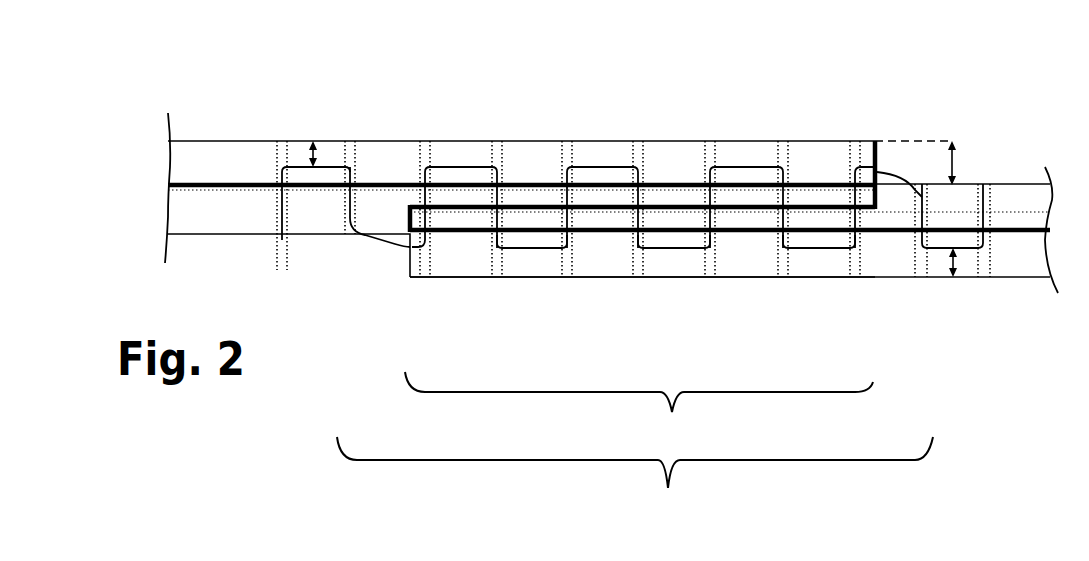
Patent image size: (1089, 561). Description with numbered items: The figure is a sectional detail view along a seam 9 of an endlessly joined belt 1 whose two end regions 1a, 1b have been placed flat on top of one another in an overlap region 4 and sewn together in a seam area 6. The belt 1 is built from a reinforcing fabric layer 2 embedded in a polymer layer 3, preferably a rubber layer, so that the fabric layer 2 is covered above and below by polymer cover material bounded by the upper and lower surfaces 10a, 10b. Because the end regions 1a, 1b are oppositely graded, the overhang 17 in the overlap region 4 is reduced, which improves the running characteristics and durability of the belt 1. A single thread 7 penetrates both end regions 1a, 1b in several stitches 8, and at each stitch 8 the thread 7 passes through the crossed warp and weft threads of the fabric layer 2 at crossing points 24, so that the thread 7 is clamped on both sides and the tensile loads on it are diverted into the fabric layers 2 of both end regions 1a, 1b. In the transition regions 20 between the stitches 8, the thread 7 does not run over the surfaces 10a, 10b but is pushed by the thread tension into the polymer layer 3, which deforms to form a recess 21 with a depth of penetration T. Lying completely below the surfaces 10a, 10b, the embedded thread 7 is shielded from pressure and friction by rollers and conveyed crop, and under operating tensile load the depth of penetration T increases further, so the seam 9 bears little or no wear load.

The belt 1 is at (801, 122).
The end region 1a is at (860, 140).
The end region 1b is at (466, 280).
The reinforcing fabric layer 2 is at (188, 183).
The polymer layer 3 is at (183, 208).
The overlap region 4 is at (639, 420).
The seam area 6 is at (635, 496).
The thread 7 is at (270, 253).
The stitch 8 is at (288, 228).
The seam 9 is at (924, 319).
The surface 10a is at (211, 136).
The surface 10b is at (865, 281).
The overhang 17 is at (962, 162).
The transition region 20 is at (445, 165).
The recess 21 is at (584, 157).
The crossing point 24 is at (692, 178).
The depth of penetration T is at (320, 152).